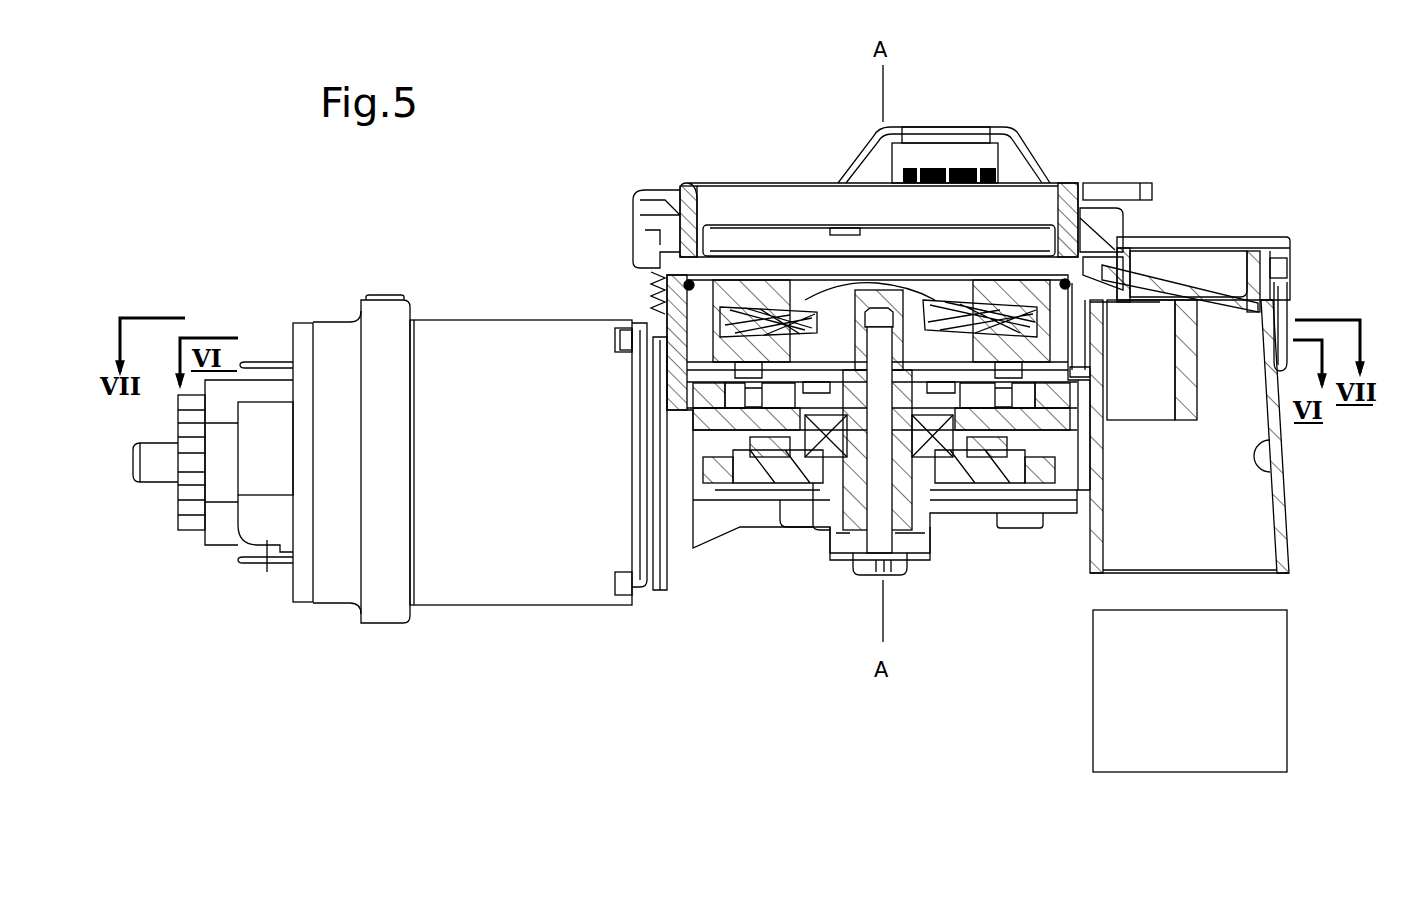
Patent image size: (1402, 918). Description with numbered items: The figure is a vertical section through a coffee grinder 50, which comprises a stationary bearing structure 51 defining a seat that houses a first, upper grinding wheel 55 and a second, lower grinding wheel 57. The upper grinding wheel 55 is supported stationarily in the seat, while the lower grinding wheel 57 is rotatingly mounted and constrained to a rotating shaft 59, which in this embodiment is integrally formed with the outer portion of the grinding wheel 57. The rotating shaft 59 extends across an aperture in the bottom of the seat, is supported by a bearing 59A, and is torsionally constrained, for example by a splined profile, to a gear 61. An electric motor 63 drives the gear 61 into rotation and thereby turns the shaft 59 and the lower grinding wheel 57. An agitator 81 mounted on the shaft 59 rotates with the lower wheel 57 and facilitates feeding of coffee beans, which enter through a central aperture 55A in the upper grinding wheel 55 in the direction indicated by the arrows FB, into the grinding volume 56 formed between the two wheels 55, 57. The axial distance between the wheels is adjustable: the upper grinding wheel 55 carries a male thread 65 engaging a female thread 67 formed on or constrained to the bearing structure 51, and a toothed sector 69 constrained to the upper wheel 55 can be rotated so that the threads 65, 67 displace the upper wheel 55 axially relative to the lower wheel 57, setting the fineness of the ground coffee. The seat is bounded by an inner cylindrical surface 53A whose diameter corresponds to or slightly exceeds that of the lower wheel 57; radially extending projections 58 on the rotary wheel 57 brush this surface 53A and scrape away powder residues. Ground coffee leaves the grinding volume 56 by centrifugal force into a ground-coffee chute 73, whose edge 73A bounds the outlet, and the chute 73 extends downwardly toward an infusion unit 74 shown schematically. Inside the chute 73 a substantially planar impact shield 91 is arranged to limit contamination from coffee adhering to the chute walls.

The grinder 50 is at (1066, 106).
The stationary bearing structure 51 is at (650, 262).
The inner cylindrical surface 53A is at (660, 290).
The first grinding wheel 55 is at (750, 292).
The aperture 55A is at (950, 268).
The grinding volume 56 is at (805, 300).
The second grinding wheel 57 is at (1072, 330).
The radially extending projections 58 is at (625, 338).
The rotating shaft 59 is at (855, 510).
The bearing 59A is at (792, 450).
The gear 61 is at (985, 478).
The electric motor 63 is at (481, 447).
The male thread 65 is at (1100, 238).
The female thread 67 is at (650, 220).
The toothed sector 69 is at (1113, 190).
The ground-coffee chute 73 is at (1282, 456).
The edge of the ground-coffee chute 73A is at (1141, 360).
The infusion unit 74 is at (1107, 722).
The agitator 81 is at (840, 300).
The impact shield 91 is at (1183, 402).
The arrows indicating feeding direction FB is at (927, 285).